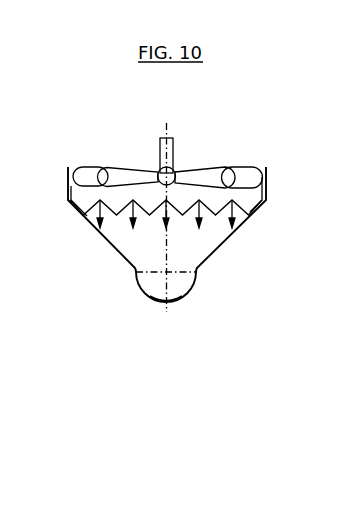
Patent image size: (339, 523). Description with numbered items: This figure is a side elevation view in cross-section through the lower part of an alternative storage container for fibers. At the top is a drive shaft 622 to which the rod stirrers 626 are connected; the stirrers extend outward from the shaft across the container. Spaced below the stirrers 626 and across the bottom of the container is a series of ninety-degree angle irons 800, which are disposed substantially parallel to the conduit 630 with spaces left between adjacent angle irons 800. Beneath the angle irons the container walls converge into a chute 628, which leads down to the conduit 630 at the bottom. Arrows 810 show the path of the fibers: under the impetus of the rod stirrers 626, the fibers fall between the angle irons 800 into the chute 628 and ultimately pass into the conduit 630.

The drive shaft 622 is at (176, 141).
The stirrer 626 is at (223, 164).
The angle iron 800 is at (251, 216).
The arrows 810 is at (94, 221).
The chute 628 is at (128, 265).
The conduit 630 is at (171, 301).